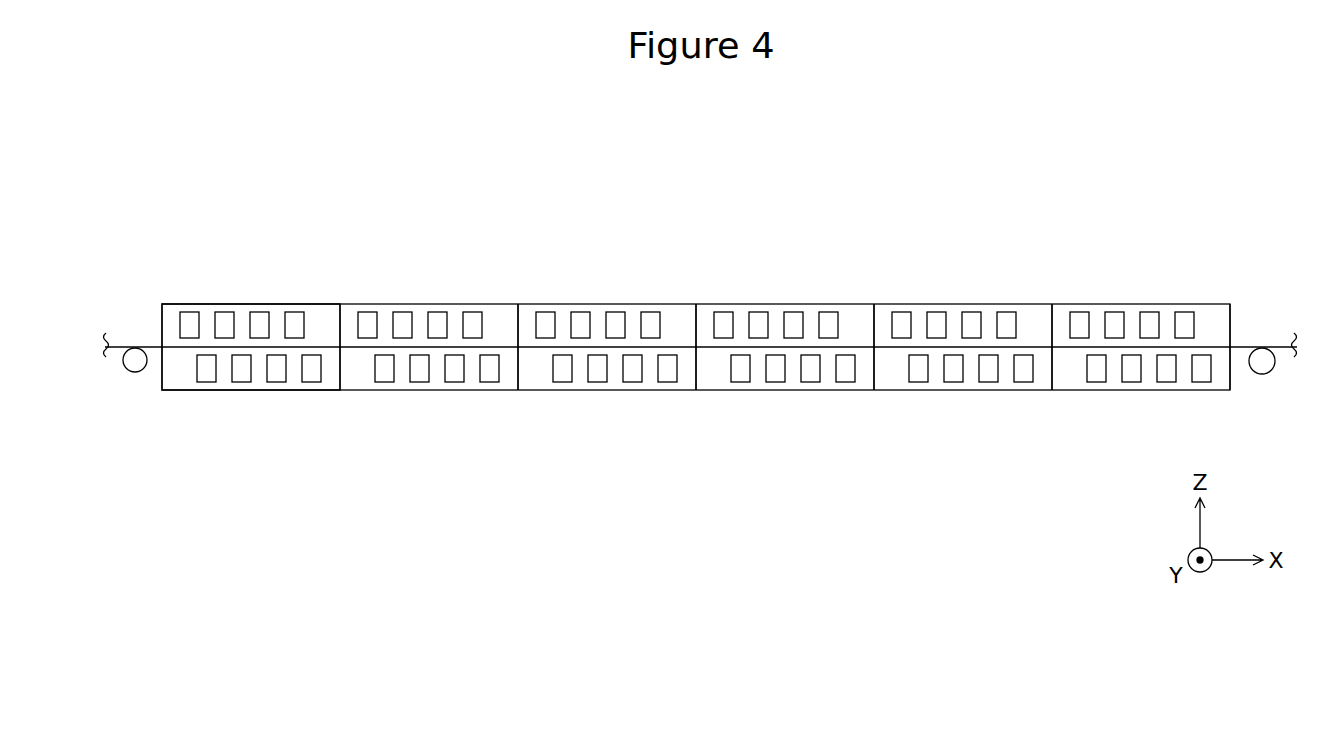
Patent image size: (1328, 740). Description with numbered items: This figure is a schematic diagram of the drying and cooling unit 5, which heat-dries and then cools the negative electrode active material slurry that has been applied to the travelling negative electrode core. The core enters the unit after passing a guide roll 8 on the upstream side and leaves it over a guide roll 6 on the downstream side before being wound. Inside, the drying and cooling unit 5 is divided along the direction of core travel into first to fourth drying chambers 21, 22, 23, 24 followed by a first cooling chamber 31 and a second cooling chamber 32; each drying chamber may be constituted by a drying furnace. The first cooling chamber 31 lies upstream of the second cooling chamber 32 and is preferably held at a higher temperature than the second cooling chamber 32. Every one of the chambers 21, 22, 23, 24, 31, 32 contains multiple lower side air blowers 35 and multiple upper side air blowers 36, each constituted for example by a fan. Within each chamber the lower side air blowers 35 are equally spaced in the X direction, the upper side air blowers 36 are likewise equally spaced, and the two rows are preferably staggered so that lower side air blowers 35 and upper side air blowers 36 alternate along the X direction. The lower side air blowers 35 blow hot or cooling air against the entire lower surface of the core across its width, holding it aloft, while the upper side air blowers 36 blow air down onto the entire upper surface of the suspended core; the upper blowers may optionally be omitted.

The drying and cooling unit 5 is at (701, 313).
The guide roll 6 is at (1263, 375).
The guide roll 8 is at (135, 373).
The first drying chamber 21 is at (331, 374).
The second drying chamber 22 is at (504, 374).
The third drying chamber 23 is at (690, 374).
The fourth drying chamber 24 is at (864, 374).
The first cooling chamber 31 is at (1040, 374).
The second cooling chamber 32 is at (1218, 374).
The lower side air blower 35 is at (282, 373).
The upper side air blower 36 is at (294, 323).